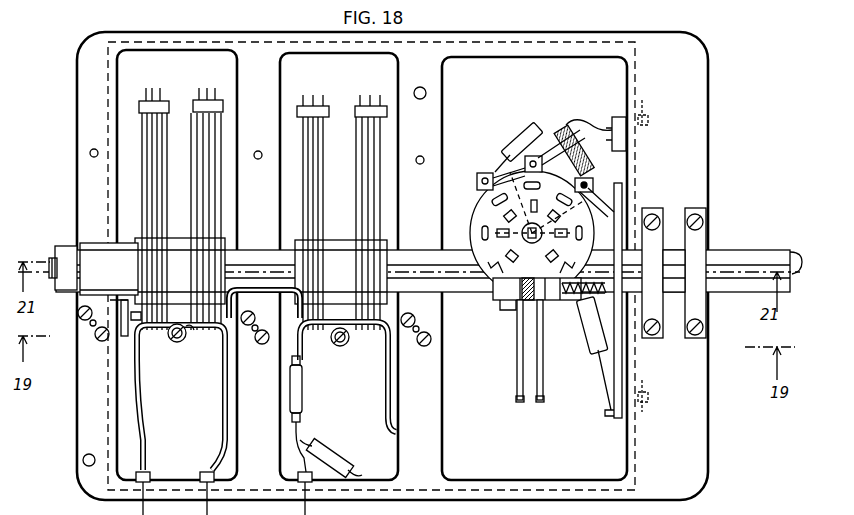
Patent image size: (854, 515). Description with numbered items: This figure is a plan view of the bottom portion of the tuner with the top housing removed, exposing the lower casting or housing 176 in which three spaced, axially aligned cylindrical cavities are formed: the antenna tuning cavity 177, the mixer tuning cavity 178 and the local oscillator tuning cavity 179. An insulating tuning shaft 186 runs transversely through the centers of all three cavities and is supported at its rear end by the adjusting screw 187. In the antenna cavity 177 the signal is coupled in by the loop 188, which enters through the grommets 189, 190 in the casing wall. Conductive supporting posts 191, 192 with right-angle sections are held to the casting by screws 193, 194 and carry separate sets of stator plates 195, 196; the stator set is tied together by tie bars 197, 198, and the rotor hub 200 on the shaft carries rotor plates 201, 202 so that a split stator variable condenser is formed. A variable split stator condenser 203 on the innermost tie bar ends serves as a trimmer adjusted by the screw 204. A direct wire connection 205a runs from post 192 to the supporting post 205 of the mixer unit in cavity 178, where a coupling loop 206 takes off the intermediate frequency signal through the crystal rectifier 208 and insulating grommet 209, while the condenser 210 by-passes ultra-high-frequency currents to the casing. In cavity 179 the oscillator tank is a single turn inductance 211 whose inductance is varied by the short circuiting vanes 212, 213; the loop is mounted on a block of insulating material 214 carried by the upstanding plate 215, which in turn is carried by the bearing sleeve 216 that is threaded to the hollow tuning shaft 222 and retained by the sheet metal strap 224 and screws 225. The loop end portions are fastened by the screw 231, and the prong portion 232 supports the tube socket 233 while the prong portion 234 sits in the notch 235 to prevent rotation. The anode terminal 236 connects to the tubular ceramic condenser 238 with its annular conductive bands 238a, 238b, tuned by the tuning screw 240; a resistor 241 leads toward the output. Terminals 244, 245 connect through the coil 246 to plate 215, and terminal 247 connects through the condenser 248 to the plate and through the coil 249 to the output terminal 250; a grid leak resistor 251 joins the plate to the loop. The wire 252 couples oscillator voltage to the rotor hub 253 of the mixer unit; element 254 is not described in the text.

The housing 176 is at (708, 53).
The antenna tuning cavity 177 is at (190, 76).
The mixer tuning cavity 178 is at (352, 79).
The local oscillator tuning cavity 179 is at (550, 82).
The tuning shaft 186 is at (466, 280).
The adjusting screw 187 is at (55, 246).
The loop 188 is at (139, 406).
The grommet 189 is at (144, 470).
The grommet 190 is at (206, 470).
The supporting post 191 is at (122, 324).
The supporting post 192 is at (250, 354).
The screw 193 is at (79, 318).
The screw 194 is at (244, 326).
The stator plates 195 is at (156, 95).
The stator plates 196 is at (228, 80).
The tie bar 197 is at (139, 106).
The tie bar 198 is at (136, 320).
The rotor hub 200 is at (176, 247).
The rotor plates 201 is at (142, 181).
The rotor plates 202 is at (213, 185).
The variable split stator condenser 203 is at (175, 343).
The adjusting screw 204 is at (189, 335).
The supporting post 205 is at (284, 320).
The direct wire connection 205a is at (250, 288).
The coupling loop 206 is at (358, 330).
The crystal rectifier 208 is at (304, 395).
The insulating grommet 209 is at (294, 497).
The condenser 210 is at (338, 455).
The single turn inductance 211 is at (516, 352).
The short circuiting vane 212 is at (515, 398).
The short circuiting vane 213 is at (545, 398).
The block of insulating material 214 is at (584, 352).
The upstanding plate 215 is at (624, 220).
The bearing sleeve 216 is at (690, 334).
The hollow tuning shaft 222 is at (746, 263).
The sheet metal strap 224 is at (703, 247).
The screw 225 is at (652, 337).
The screw 231 is at (602, 257).
The prong portion 232 is at (540, 238).
The tube socket 233 is at (490, 220).
The prong portion 234 is at (532, 243).
The notch 235 is at (503, 298).
The anode terminal 236 is at (496, 266).
The tubular ceramic condenser 238 is at (548, 292).
The annular conductive band 238a is at (495, 296).
The annular conductive band 238b is at (564, 335).
The tuning screw 240 is at (600, 285).
The resistor 241 is at (618, 350).
The terminal 244 is at (483, 173).
The terminal 245 is at (540, 158).
The coil 246 is at (582, 165).
The terminal 247 is at (593, 185).
The condenser 248 is at (614, 212).
The coil 249 is at (585, 117).
The output terminal 250 is at (650, 122).
The grid leak resistor 251 is at (522, 133).
The wire 252 is at (410, 265).
The rotor hub 253 is at (342, 255).
The bracket 254 is at (673, 240).